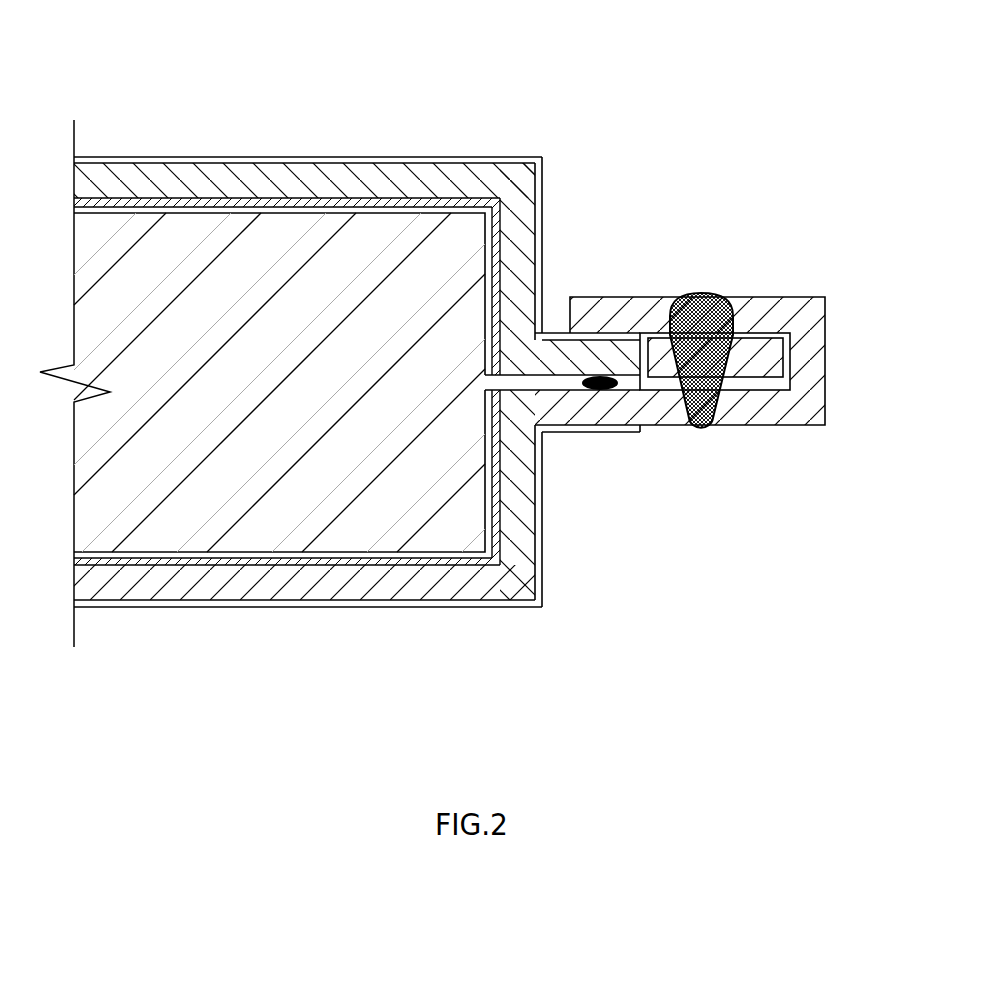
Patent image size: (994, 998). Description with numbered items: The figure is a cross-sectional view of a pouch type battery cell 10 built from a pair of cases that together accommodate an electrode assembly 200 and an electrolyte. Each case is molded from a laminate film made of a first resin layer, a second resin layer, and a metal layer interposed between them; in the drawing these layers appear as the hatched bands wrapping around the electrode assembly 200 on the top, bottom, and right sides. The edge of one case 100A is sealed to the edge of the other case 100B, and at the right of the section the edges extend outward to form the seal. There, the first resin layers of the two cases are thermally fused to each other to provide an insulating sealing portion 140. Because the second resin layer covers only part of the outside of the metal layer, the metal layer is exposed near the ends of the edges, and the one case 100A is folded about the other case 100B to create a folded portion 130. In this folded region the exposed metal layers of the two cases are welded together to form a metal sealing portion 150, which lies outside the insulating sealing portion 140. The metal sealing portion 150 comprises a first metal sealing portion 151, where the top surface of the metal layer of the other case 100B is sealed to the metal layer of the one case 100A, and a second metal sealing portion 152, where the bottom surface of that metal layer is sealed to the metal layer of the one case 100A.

The pouch type battery cell 10 is at (56, 43).
The one case 100A is at (525, 630).
The other case 100B is at (236, 150).
The folded portion 130 is at (736, 270).
The insulating sealing portion 140 is at (600, 392).
The metal sealing portion 150 is at (900, 372).
The first metal sealing portion 151 is at (735, 337).
The second metal sealing portion 152 is at (735, 383).
The electrode assembly 200 is at (196, 232).